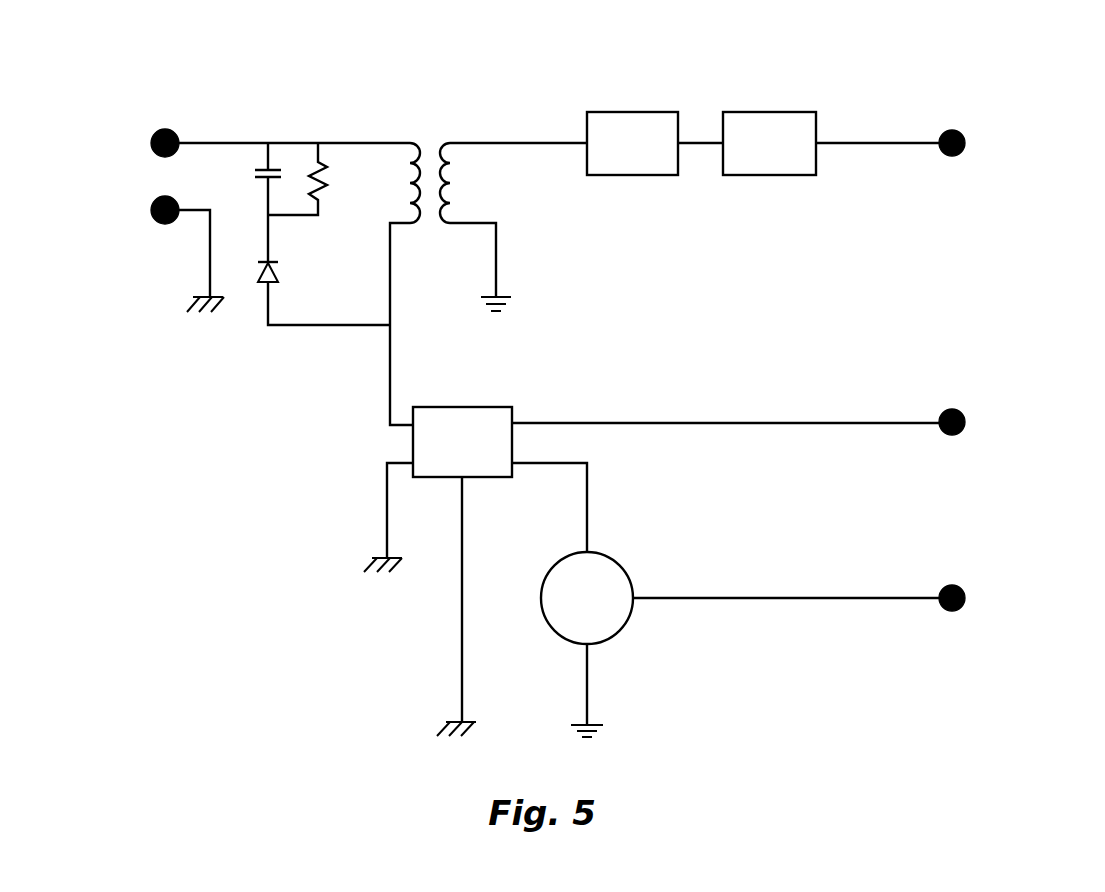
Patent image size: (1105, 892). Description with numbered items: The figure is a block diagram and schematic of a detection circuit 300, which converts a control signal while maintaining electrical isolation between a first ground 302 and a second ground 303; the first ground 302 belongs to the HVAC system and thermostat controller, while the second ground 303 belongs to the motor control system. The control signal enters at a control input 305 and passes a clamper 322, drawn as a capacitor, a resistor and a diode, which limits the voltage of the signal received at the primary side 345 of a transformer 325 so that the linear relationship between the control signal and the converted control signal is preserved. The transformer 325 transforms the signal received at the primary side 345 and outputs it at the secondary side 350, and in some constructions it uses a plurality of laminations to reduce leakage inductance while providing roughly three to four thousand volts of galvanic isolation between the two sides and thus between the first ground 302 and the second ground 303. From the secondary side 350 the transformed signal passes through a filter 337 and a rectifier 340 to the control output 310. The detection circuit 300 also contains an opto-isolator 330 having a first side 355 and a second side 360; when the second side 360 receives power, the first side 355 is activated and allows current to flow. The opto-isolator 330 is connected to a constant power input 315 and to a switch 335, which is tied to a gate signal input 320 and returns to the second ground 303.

The detection circuit 300 is at (262, 128).
The control input 305 is at (133, 175).
The first ground 302 is at (210, 297).
The second ground 303 is at (498, 297).
The clamper 322 is at (250, 342).
The primary side 345 is at (405, 140).
The transformer 325 is at (430, 140).
The secondary side 350 is at (463, 142).
The filter 337 is at (632, 143).
The rectifier 340 is at (747, 143).
The control output 310 is at (965, 132).
The opto-isolator 330 is at (462, 442).
The first side 355 is at (372, 440).
The second side 360 is at (522, 408).
The constant power input 315 is at (960, 412).
The switch 335 is at (572, 553).
The gate signal input 320 is at (960, 588).